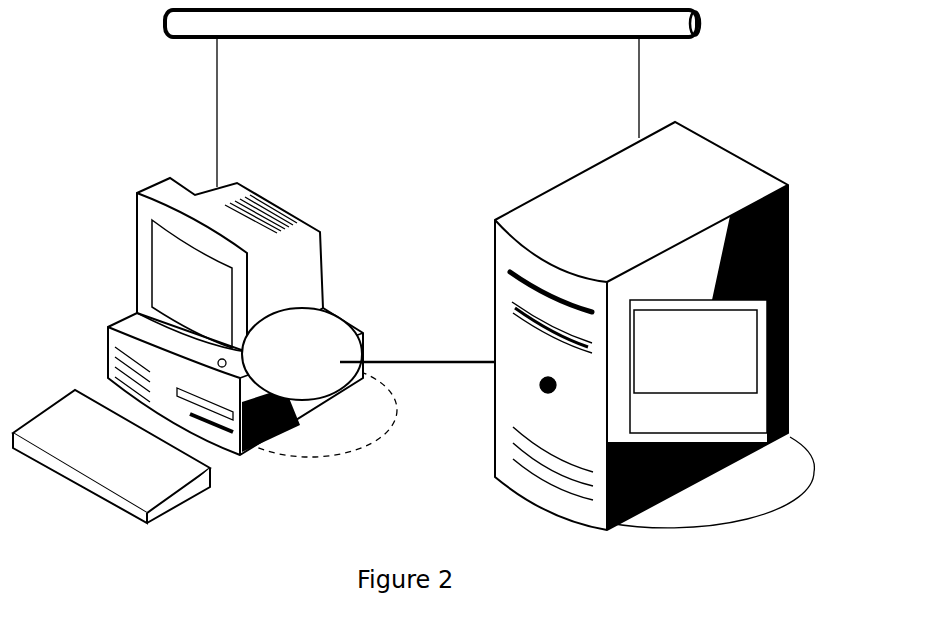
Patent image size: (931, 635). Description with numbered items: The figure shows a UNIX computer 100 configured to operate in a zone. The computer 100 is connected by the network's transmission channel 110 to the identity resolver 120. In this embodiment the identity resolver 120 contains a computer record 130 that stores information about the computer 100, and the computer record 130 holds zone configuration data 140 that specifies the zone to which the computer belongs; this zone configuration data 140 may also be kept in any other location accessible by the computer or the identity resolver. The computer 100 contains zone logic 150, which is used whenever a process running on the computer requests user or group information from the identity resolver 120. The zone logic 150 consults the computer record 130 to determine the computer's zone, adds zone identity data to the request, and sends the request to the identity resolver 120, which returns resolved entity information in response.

The UNIX computer 100 is at (172, 290).
The transmission channel 110 is at (433, 28).
The identity resolver 120 is at (598, 185).
The computer record 130 is at (752, 412).
The zone configuration data 140 is at (747, 330).
The zone logic 150 is at (300, 372).